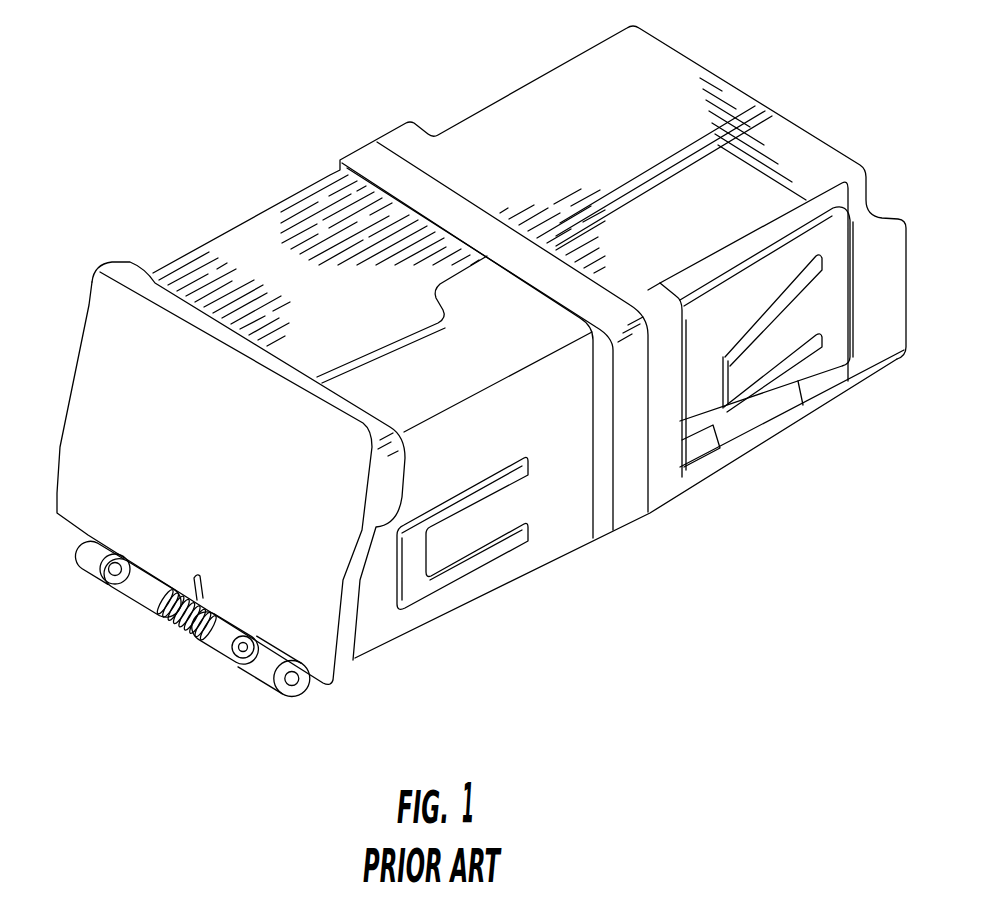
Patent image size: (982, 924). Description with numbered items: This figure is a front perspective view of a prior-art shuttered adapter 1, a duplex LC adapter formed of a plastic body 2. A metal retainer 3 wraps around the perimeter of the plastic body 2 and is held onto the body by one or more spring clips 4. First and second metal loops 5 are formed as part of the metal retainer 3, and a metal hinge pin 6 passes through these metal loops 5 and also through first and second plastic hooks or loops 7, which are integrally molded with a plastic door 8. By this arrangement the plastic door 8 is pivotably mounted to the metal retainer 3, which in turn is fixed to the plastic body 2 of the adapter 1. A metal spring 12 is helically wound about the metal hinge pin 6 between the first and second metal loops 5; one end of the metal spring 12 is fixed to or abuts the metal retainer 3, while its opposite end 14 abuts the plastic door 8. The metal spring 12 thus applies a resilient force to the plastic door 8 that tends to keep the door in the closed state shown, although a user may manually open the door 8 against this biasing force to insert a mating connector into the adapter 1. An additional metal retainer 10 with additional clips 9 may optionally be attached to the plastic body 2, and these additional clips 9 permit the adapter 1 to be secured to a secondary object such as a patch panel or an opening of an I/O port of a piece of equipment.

The shuttered adapter 1 is at (207, 118).
The plastic body 2 is at (591, 152).
The metal retainer 3 is at (335, 342).
The spring clip 4 is at (465, 533).
The metal loop 5 is at (143, 603).
The metal hinge pin 6 is at (120, 583).
The plastic loop 7 is at (83, 563).
The plastic door 8 is at (214, 477).
The additional clip 9 is at (772, 345).
The additional metal retainer 10 is at (750, 423).
The metal spring 12 is at (180, 627).
The opposite end of the metal spring 14 is at (198, 594).